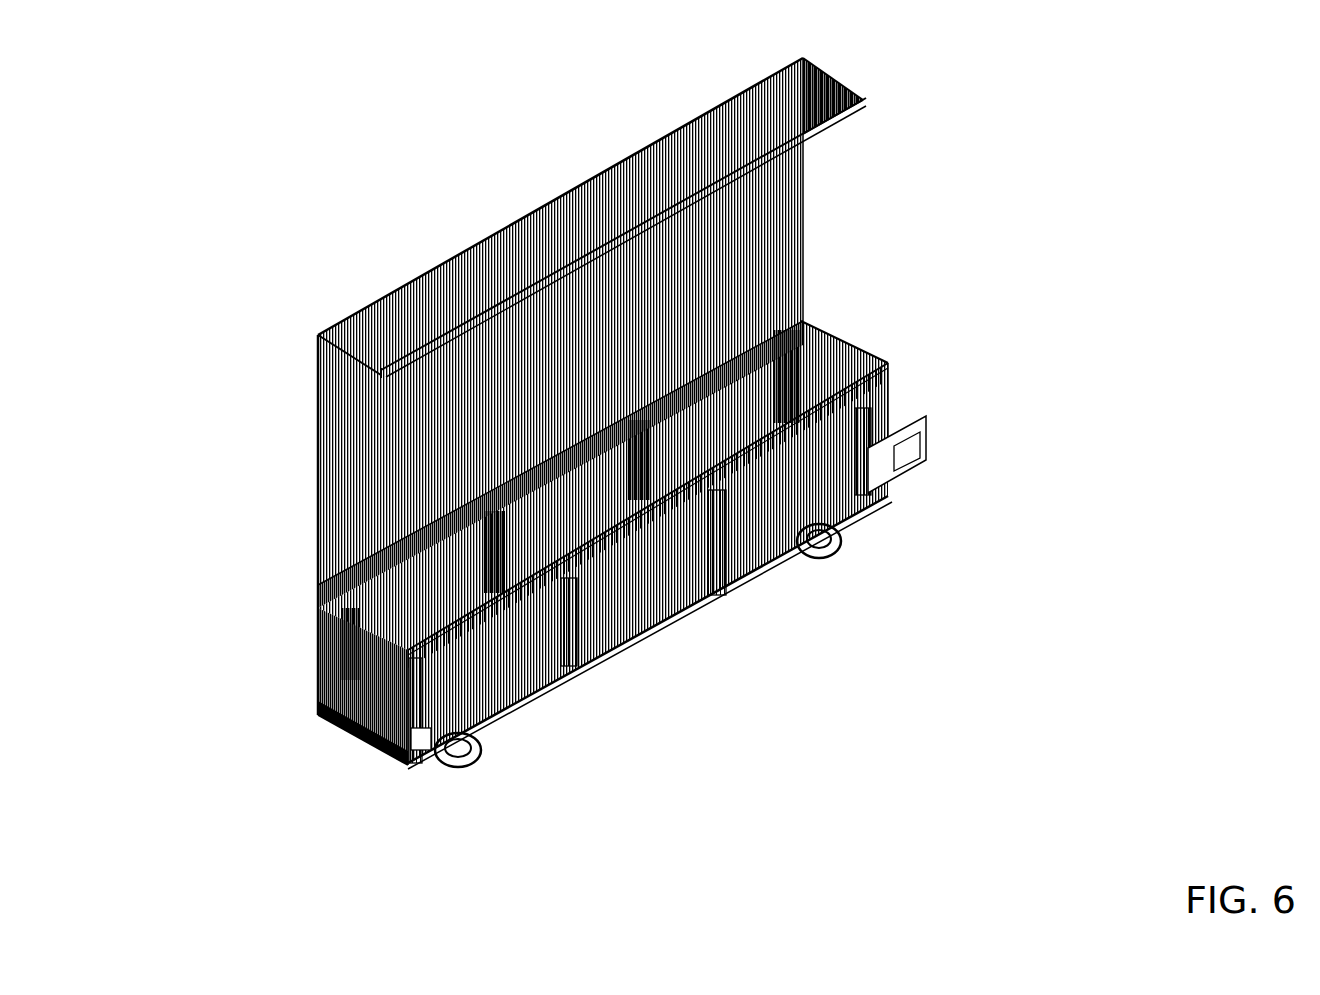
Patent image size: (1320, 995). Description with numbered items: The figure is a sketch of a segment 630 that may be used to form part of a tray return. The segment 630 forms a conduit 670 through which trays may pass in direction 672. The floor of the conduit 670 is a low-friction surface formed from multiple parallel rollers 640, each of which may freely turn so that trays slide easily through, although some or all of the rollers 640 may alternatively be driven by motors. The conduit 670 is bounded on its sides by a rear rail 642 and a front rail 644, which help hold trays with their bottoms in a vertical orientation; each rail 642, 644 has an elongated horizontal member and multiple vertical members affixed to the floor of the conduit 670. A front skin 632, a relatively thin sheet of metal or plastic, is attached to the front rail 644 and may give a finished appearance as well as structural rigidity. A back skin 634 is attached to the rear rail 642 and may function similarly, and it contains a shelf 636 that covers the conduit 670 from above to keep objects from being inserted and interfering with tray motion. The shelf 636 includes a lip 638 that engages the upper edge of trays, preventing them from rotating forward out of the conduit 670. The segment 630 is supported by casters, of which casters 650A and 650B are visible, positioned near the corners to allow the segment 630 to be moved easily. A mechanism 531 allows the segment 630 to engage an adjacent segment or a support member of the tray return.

The conduit 670 is at (322, 438).
The back skin 634 is at (742, 212).
The shelf 636 is at (708, 118).
The lip 638 is at (856, 92).
The segment 630 is at (640, 613).
The rail 642 is at (795, 312).
The rail 644 is at (868, 352).
The front skin 632 is at (880, 378).
The rollers 640 is at (343, 740).
The mechanism 531 is at (905, 463).
The caster 650A is at (473, 730).
The caster 650B is at (833, 517).
The direction 672 is at (290, 724).